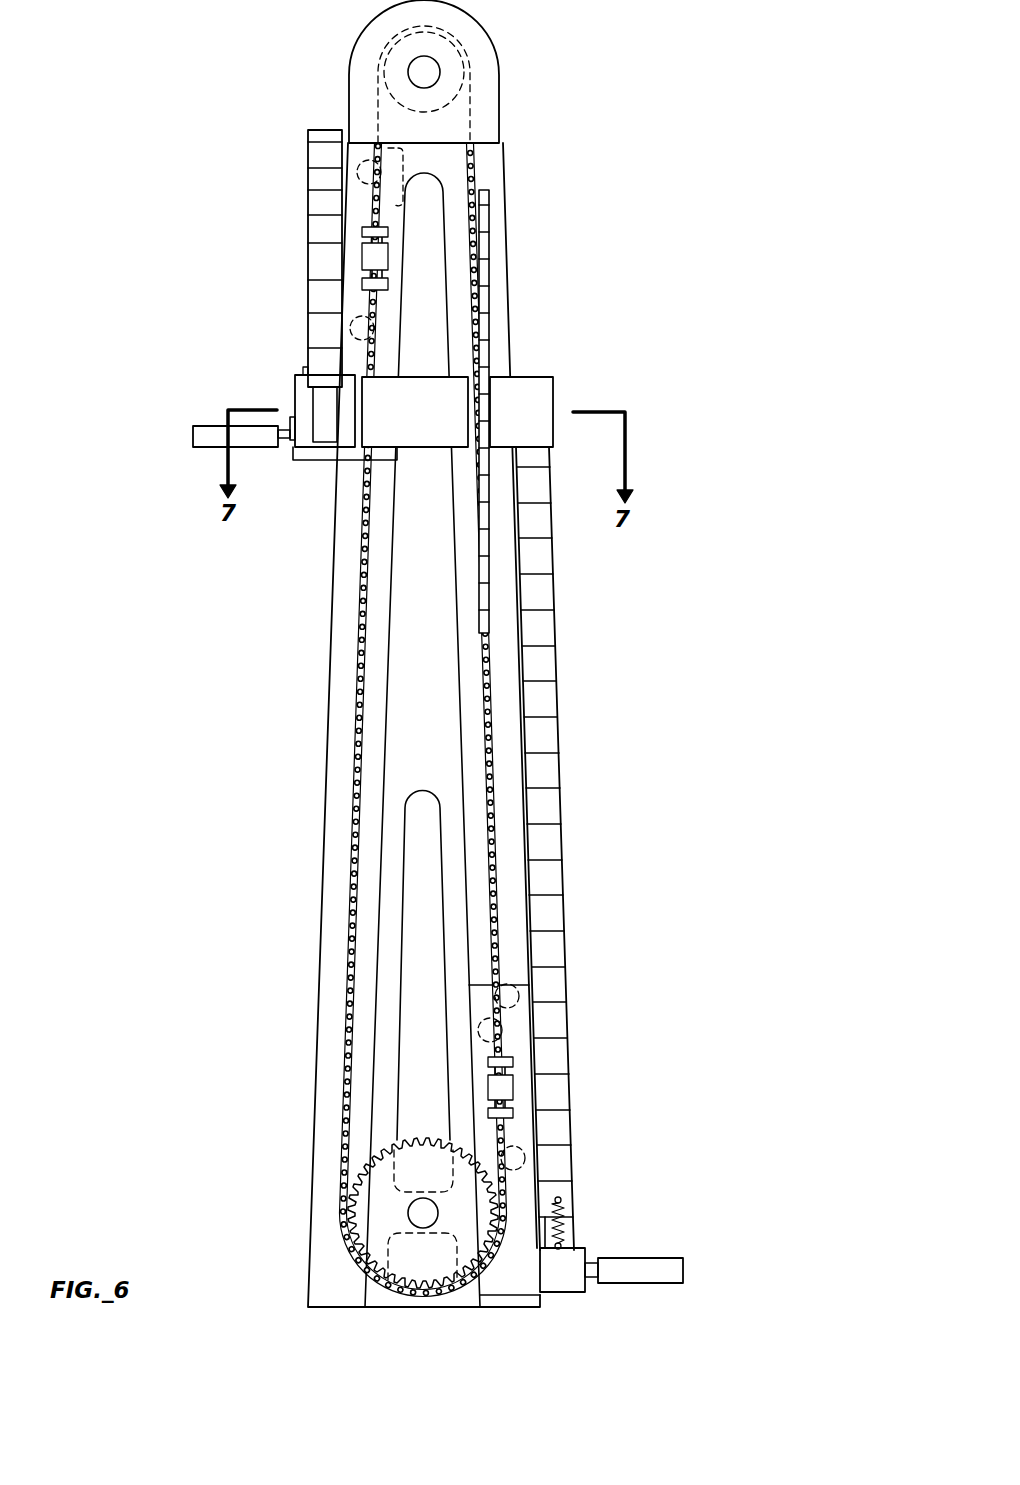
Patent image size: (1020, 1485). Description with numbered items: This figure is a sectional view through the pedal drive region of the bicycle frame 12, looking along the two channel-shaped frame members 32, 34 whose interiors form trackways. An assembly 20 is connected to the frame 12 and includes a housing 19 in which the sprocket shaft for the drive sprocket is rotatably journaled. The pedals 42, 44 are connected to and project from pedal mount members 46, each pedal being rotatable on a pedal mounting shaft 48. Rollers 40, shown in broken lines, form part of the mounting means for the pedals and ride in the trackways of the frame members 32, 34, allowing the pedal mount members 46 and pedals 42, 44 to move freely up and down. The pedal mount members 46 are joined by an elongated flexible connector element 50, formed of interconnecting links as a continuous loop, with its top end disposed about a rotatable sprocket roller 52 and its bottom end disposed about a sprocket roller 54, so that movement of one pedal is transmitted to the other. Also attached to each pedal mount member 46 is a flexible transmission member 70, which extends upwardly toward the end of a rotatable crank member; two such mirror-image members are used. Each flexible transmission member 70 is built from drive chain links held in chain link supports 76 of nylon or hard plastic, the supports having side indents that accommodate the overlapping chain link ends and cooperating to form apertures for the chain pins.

The frame 12 is at (497, 260).
The housing 19 is at (380, 430).
The assembly 20 is at (428, 369).
The frame member 32 is at (505, 813).
The frame member 34 is at (342, 675).
The rollers 40 is at (403, 150).
The pedal 42 is at (668, 1258).
The pedal 44 is at (217, 440).
The pedal mount member 46 is at (300, 395).
The pedal mounting shaft 48 is at (287, 443).
The elongated flexible connector element 50 is at (358, 588).
The sprocket roller 52 is at (472, 121).
The sprocket roller 54 is at (373, 1212).
The flexible transmission member 70 is at (296, 143).
The chain link supports 76 is at (320, 182).